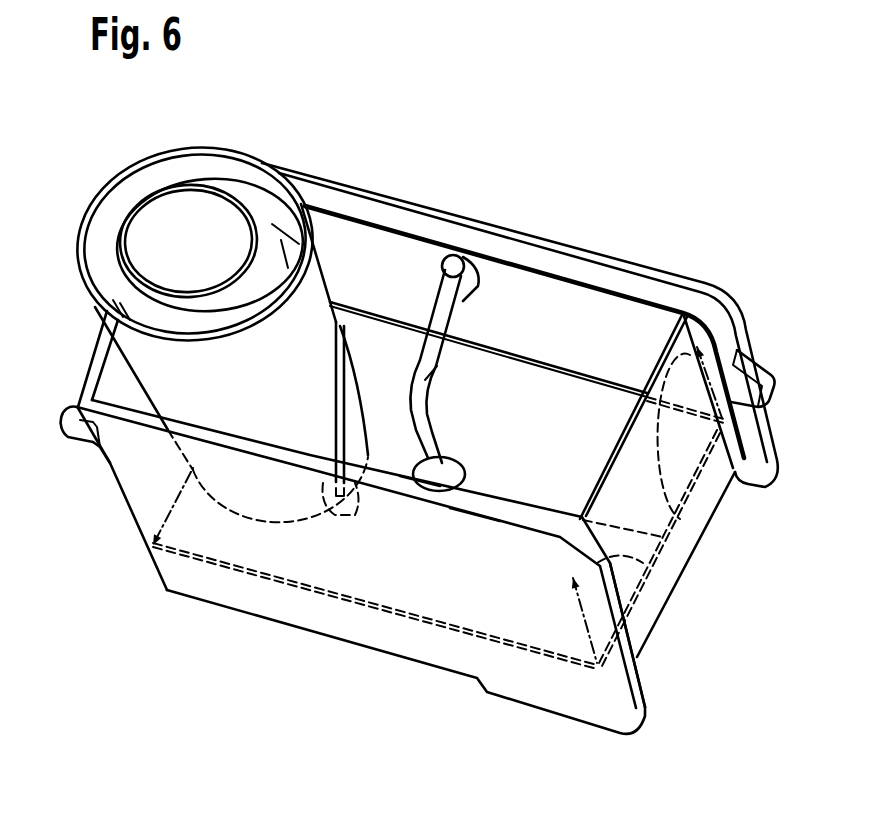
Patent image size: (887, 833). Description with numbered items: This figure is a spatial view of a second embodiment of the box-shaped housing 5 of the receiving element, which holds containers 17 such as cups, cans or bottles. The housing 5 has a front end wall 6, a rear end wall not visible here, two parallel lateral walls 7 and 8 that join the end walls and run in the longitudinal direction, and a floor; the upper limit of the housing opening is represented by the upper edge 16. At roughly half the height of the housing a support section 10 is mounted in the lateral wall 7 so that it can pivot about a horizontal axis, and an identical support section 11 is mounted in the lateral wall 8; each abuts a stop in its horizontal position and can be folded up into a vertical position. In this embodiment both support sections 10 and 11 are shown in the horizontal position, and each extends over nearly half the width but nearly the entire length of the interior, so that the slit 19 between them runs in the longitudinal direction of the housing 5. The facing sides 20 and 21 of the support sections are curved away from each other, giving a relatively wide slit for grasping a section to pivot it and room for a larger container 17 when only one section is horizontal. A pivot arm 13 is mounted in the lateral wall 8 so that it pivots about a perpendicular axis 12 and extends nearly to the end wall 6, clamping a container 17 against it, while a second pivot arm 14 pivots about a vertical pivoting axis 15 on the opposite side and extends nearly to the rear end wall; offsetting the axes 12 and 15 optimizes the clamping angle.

The housing 5 is at (484, 184).
The front end wall 6 is at (115, 388).
The lateral wall 7 is at (140, 478).
The lateral wall 8 is at (633, 320).
The support section 10 is at (517, 500).
The support section 11 is at (577, 458).
The pivoting axis 12 is at (580, 372).
The pivot arm 13 is at (445, 324).
The pivot arm 14 is at (347, 377).
The pivoting axis 15 is at (327, 593).
The upper edge 16 is at (342, 188).
The container 17 is at (150, 353).
The slit 19 is at (432, 482).
The facing side 20 is at (462, 469).
The facing side 21 is at (477, 500).